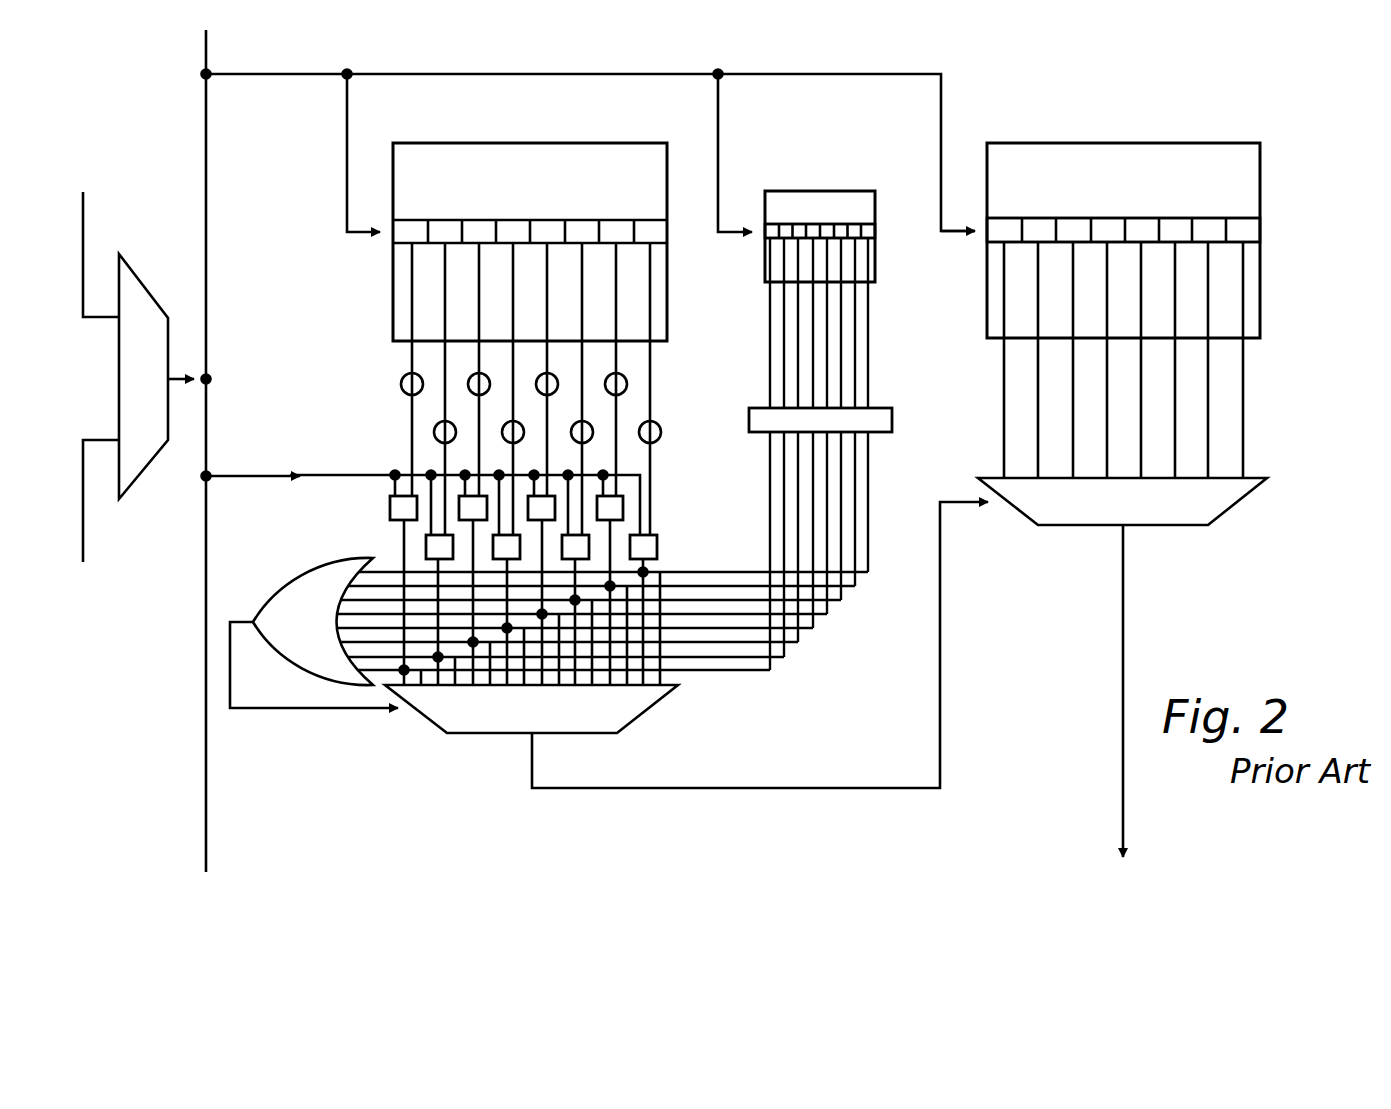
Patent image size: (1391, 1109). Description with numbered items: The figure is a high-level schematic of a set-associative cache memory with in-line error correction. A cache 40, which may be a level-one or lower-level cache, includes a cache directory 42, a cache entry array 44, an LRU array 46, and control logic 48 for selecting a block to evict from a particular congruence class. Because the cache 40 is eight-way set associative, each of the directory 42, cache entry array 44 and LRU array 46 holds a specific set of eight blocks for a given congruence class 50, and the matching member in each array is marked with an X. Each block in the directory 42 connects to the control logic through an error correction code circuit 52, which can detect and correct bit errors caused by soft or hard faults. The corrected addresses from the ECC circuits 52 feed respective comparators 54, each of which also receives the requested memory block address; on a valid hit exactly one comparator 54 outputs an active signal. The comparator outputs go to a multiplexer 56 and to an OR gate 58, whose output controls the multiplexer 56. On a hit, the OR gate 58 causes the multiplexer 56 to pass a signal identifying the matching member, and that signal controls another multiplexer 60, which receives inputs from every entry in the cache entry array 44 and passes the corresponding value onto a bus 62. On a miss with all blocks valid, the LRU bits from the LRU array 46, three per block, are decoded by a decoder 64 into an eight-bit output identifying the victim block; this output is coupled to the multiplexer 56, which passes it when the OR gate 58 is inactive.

The cache 40 is at (1262, 96).
The cache directory 42 is at (437, 128).
The cache entry array 44 is at (1260, 162).
The LRU array 46 is at (878, 214).
The control logic 48 is at (418, 752).
The congruence class 50 is at (396, 251).
The error correction code (ECC) circuit 52 is at (398, 382).
The comparator 54 is at (390, 508).
The multiplexer 56 is at (653, 710).
The OR gate 58 is at (292, 533).
The multiplexer 60 is at (1240, 501).
The bus 62 is at (207, 798).
The decoder 64 is at (892, 421).